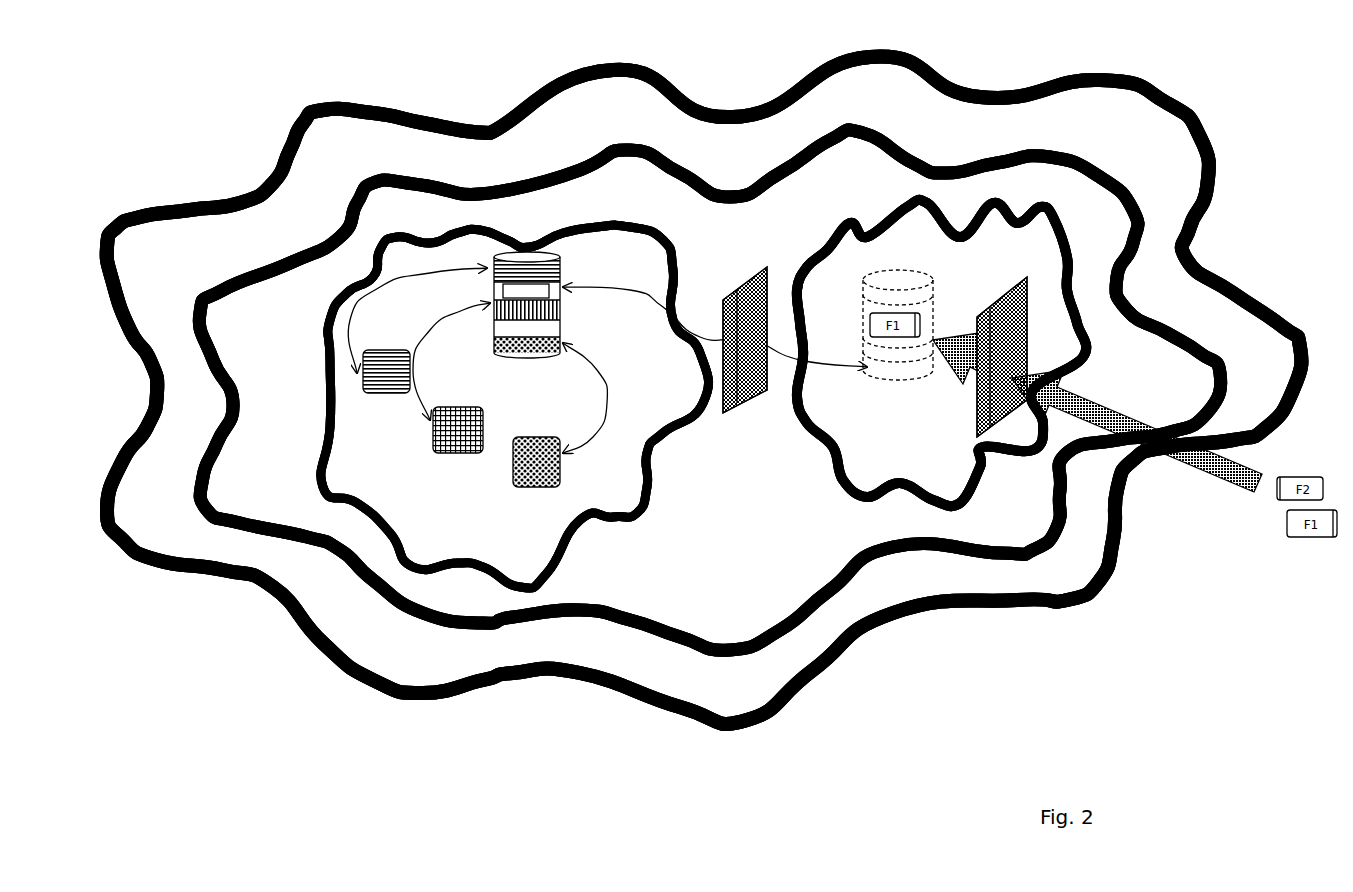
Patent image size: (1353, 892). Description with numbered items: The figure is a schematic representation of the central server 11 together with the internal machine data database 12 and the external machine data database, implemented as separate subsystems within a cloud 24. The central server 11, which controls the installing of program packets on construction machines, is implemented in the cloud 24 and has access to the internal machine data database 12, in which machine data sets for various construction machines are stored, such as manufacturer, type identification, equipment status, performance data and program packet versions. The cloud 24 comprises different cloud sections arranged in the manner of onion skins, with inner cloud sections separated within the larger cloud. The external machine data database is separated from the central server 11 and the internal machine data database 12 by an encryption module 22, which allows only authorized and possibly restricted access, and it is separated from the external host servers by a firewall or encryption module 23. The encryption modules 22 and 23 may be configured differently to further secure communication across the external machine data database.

The central server 11 is at (561, 257).
The internal machine data database 12 is at (385, 393).
The encryption module 22 is at (753, 277).
The encryption module 23 is at (977, 417).
The cloud 24 is at (1200, 123).